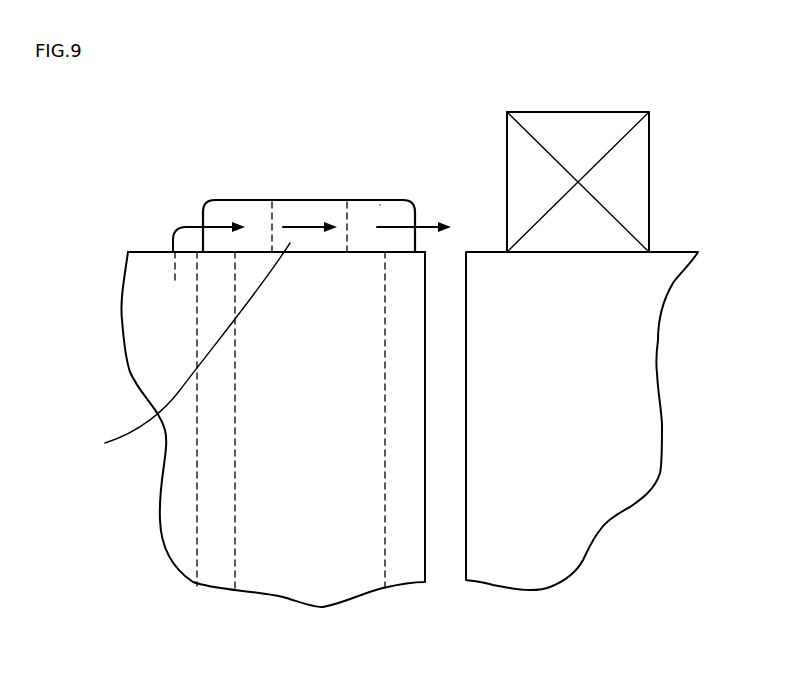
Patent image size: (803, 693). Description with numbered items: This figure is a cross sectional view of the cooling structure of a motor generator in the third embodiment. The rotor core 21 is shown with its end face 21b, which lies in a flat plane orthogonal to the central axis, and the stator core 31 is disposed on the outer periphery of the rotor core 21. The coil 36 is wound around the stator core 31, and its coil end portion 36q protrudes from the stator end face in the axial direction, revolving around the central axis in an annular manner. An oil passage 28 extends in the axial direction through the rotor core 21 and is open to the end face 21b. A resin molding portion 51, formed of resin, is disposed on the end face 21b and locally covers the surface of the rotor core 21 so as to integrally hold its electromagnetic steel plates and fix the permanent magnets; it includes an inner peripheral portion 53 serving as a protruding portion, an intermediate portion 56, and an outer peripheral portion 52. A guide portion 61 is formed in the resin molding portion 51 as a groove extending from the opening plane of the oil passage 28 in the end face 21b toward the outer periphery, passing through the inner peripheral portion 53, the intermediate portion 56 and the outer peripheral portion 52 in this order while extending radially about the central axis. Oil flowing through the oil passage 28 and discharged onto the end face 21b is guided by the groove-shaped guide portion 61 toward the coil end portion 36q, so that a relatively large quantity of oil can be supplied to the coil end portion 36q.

The rotor core 21 is at (118, 377).
The end face 21b is at (152, 252).
The oil passage 28 is at (130, 311).
The stator core 31 is at (670, 378).
The coil 36 is at (662, 189).
The coil end portion 36q is at (580, 128).
The resin molding portion 51 is at (205, 187).
The outer peripheral portion 52 is at (383, 212).
The inner peripheral portion 53 is at (245, 212).
The intermediate portion 56 is at (307, 213).
The guide portion 61 is at (182, 348).